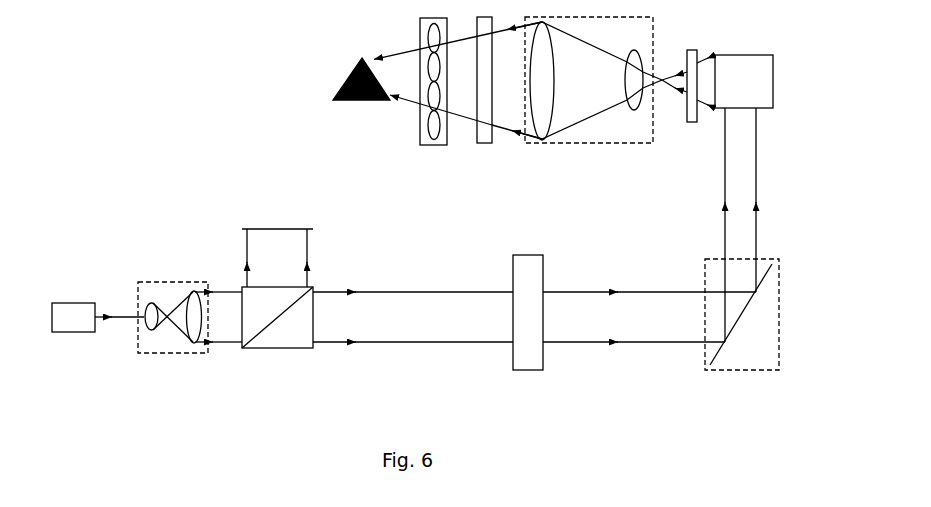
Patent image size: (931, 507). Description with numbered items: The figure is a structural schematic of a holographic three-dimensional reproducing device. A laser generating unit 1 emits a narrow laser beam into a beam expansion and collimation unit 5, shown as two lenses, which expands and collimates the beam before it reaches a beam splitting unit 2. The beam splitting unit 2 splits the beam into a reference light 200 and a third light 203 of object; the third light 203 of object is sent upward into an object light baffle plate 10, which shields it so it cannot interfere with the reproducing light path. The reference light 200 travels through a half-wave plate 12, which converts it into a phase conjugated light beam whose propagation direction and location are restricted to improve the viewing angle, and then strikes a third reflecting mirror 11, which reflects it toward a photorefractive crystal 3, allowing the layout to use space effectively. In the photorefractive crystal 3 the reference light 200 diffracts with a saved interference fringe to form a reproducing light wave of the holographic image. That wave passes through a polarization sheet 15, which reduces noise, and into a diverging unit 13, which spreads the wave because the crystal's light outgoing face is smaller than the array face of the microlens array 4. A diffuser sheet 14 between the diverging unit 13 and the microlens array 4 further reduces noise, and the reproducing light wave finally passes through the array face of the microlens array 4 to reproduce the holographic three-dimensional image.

The laser generating unit 1 is at (72, 313).
The beam expansion and collimation unit 5 is at (158, 277).
The beam splitting unit 2 is at (288, 348).
The object light baffle plate 10 is at (278, 228).
The third light of object 203 is at (307, 263).
The reference light 200 is at (398, 343).
The half-wave plate 12 is at (543, 355).
The third reflecting mirror 11 is at (779, 310).
The photorefractive crystal 3 is at (767, 108).
The polarization sheet 15 is at (693, 123).
The diverging unit 13 is at (615, 143).
The diffuser sheet 14 is at (484, 145).
The microlens array 4 is at (437, 148).